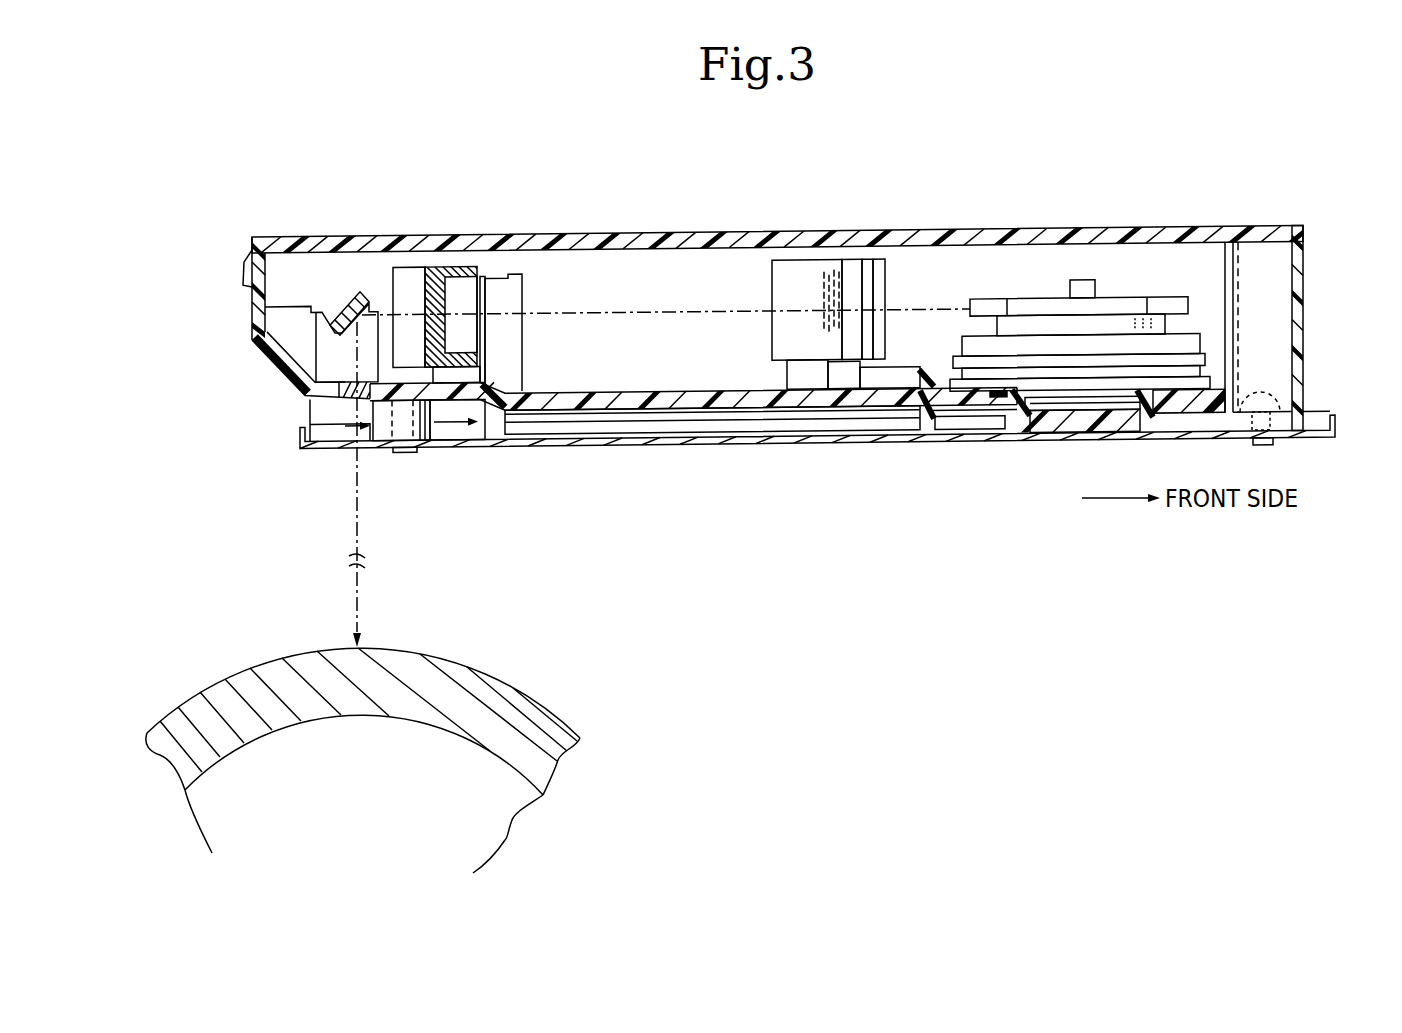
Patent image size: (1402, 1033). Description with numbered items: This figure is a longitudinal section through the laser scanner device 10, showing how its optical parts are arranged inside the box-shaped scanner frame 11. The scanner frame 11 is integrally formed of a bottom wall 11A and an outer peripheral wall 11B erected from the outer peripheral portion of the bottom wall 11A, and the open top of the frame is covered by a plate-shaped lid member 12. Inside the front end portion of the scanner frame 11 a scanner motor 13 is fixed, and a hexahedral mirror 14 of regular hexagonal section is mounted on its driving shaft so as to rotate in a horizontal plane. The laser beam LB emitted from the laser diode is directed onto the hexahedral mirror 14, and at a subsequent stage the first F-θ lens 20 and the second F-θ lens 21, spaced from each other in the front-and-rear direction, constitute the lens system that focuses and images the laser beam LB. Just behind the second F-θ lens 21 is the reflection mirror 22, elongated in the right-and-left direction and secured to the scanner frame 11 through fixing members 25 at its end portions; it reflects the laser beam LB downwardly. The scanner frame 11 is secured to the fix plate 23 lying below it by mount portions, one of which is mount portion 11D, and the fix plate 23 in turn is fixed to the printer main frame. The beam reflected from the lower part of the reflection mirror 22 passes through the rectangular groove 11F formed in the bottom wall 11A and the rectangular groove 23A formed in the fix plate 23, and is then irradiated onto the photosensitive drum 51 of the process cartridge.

The laser scanner device 10 is at (1020, 184).
The scanner frame 11 is at (654, 414).
The bottom wall 11A is at (880, 405).
The outer peripheral wall 11B is at (247, 303).
The mount portion 11D is at (1277, 279).
The rectangular groove (cut-out portion) 11F is at (343, 403).
The lid member 12 is at (732, 232).
The scanner motor 13 is at (1070, 398).
The hexahedral mirror 14 is at (1025, 300).
The first F-θ lens 20 is at (830, 262).
The second F-θ lens 21 is at (445, 267).
The reflection mirror 22 is at (348, 302).
The fix plate 23 is at (712, 443).
The rectangular groove (cut-out portion) 23A is at (362, 448).
The fixing member 25 is at (315, 354).
The laser beam LB is at (610, 323).
The photosensitive drum 51 is at (535, 702).